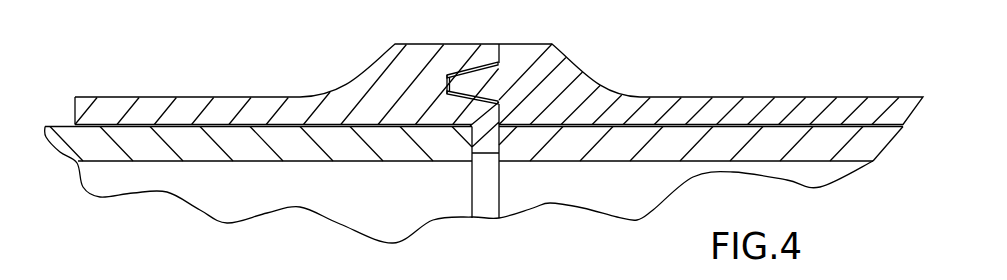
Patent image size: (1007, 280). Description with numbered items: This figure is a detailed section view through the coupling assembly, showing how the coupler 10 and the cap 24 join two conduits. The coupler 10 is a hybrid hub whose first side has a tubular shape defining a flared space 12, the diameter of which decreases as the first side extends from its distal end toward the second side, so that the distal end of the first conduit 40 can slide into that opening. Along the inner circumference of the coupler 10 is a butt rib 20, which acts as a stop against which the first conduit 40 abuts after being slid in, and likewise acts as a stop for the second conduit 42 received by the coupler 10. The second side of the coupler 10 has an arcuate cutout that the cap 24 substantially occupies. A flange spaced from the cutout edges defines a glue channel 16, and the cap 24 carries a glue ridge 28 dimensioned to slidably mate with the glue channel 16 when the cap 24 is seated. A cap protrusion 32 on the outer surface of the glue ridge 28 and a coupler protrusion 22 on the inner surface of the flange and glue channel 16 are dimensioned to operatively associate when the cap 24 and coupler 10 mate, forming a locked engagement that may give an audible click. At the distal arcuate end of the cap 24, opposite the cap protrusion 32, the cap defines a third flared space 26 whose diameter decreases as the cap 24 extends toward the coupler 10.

The coupler 10 is at (227, 103).
The flared space 12 is at (77, 126).
The glue channel 16 is at (503, 78).
The butt rib 20 is at (473, 148).
The coupler protrusion 22 is at (450, 72).
The cap 24 is at (720, 100).
The third flared space 26 is at (903, 126).
The glue ridge 28 is at (481, 68).
The cap protrusion 32 is at (447, 75).
The first conduit 40 is at (153, 157).
The second conduit 42 is at (820, 157).